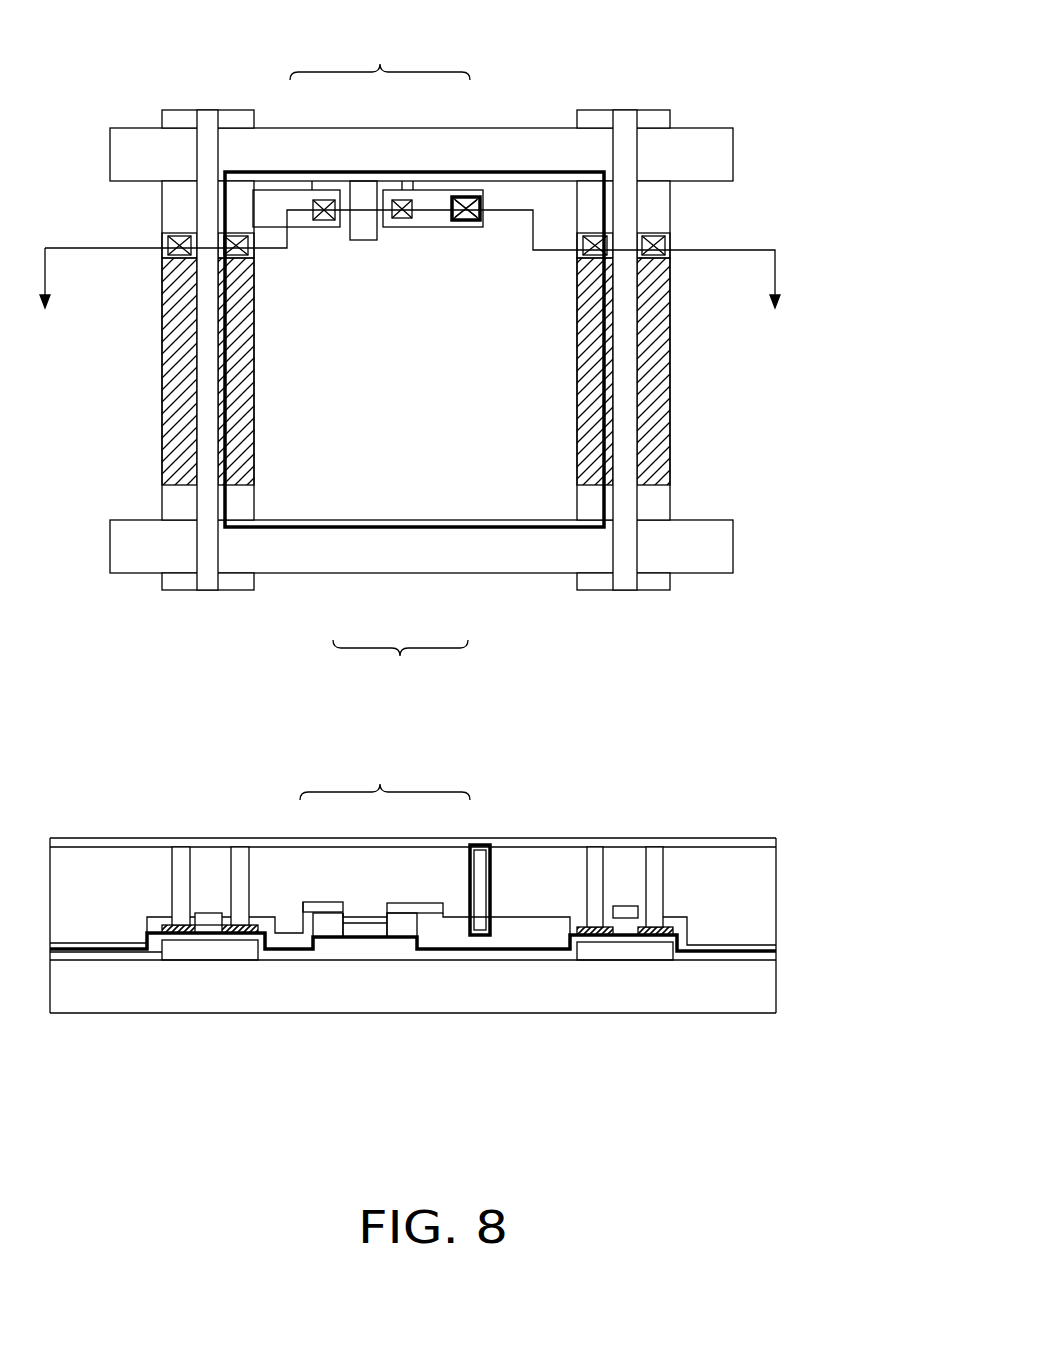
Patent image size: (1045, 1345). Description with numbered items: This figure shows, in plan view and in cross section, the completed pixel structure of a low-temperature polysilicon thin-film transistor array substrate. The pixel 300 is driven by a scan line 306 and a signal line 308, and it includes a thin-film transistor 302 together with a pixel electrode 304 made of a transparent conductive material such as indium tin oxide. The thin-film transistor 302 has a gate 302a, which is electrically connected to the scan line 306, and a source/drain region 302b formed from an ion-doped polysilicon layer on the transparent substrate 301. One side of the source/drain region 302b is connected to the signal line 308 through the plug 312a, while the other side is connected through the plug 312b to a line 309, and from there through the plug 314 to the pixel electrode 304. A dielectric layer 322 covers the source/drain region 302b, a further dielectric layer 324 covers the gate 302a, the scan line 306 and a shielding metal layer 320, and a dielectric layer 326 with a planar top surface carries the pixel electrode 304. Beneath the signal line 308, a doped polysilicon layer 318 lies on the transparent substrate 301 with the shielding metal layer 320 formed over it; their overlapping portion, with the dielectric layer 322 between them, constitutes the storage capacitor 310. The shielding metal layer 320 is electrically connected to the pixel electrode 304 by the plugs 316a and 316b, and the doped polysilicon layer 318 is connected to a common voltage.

The pixel 300 is at (400, 668).
The transparent substrate 301 is at (778, 1000).
The thin-film transistor 302 is at (362, 600).
The gate 302a is at (365, 185).
The source/drain region 302b is at (322, 198).
The pixel electrode 304 is at (460, 493).
The scan line 306 is at (130, 145).
The signal line 308 is at (214, 110).
The line 309 is at (470, 198).
The storage capacitor 310 is at (254, 345).
The plug 312a is at (322, 222).
The plug 312b is at (402, 222).
The plug 314 is at (470, 224).
The plug 316a is at (180, 242).
The plug 316b is at (660, 244).
The doped polysilicon layer 318 is at (182, 112).
The shielding metal layer 320 is at (165, 315).
The dielectric layer 322 is at (780, 948).
The dielectric layer 324 is at (770, 945).
The dielectric layer 326 is at (772, 862).